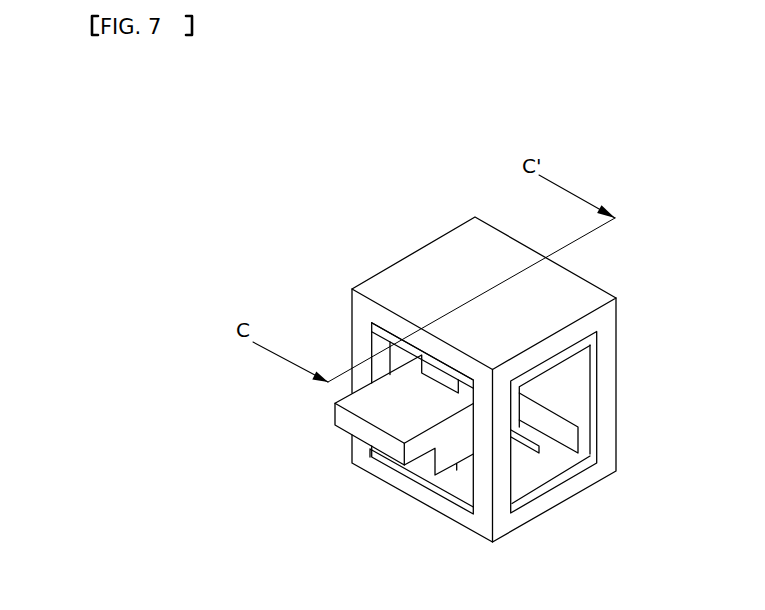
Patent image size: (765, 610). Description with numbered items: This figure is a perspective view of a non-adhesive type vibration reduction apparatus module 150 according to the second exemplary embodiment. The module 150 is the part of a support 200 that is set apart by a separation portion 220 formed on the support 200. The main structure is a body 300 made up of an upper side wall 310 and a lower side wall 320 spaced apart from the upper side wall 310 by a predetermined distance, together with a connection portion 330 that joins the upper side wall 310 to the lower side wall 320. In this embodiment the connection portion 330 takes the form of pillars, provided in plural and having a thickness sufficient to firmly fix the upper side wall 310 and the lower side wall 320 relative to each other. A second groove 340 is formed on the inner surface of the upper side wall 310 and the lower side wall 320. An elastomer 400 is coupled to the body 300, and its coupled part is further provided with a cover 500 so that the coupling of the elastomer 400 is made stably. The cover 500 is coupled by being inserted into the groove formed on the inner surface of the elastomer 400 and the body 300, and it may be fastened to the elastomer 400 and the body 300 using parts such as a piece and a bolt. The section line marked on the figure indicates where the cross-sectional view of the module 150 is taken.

The module 150 is at (637, 170).
The support 200 is at (317, 438).
The separation portion 220 is at (378, 440).
The body 300 is at (698, 482).
The upper side wall 310 is at (560, 292).
The lower side wall 320 is at (586, 480).
The connection portion 330 is at (607, 396).
The second groove 340 is at (578, 342).
The elastomer 400 is at (459, 482).
The cover 500 is at (368, 325).